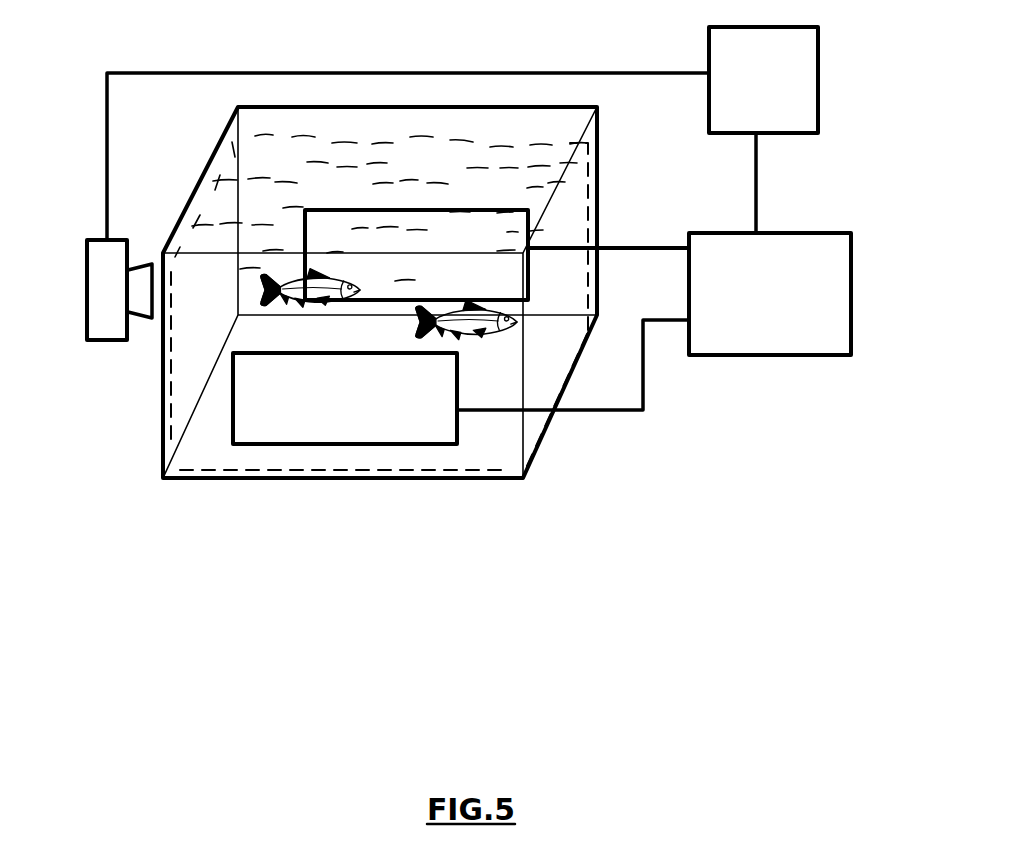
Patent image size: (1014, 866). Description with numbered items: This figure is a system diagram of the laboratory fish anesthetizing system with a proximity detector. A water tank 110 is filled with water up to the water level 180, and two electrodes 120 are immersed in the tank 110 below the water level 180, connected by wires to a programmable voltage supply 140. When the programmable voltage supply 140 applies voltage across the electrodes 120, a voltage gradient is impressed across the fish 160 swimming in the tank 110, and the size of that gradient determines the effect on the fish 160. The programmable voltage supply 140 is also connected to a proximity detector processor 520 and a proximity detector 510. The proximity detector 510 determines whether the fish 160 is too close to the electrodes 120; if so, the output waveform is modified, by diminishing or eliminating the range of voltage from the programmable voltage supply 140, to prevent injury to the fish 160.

The water tank 110 is at (540, 447).
The electrode 120 is at (559, 247).
The programmable voltage supply 140 is at (851, 295).
The fish 160 is at (345, 283).
The water level 180 is at (177, 427).
The proximity detector 510 is at (85, 327).
The proximity detector processor 520 is at (818, 50).